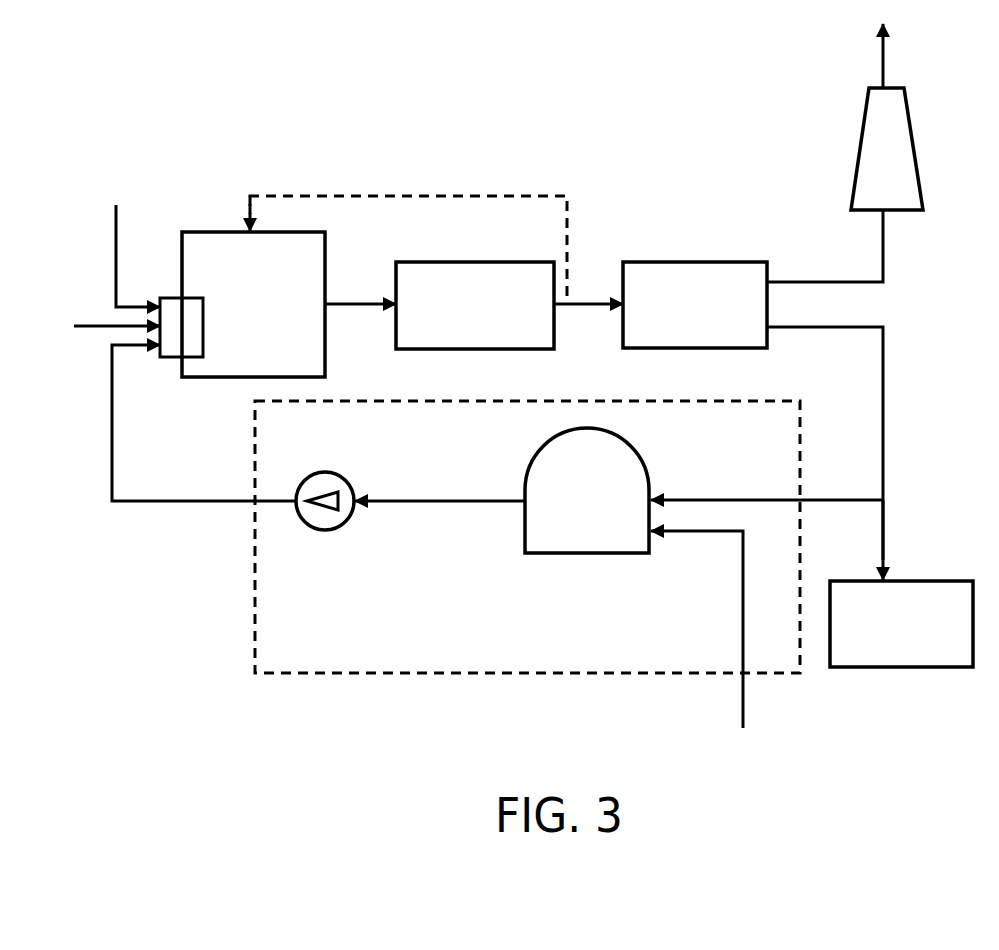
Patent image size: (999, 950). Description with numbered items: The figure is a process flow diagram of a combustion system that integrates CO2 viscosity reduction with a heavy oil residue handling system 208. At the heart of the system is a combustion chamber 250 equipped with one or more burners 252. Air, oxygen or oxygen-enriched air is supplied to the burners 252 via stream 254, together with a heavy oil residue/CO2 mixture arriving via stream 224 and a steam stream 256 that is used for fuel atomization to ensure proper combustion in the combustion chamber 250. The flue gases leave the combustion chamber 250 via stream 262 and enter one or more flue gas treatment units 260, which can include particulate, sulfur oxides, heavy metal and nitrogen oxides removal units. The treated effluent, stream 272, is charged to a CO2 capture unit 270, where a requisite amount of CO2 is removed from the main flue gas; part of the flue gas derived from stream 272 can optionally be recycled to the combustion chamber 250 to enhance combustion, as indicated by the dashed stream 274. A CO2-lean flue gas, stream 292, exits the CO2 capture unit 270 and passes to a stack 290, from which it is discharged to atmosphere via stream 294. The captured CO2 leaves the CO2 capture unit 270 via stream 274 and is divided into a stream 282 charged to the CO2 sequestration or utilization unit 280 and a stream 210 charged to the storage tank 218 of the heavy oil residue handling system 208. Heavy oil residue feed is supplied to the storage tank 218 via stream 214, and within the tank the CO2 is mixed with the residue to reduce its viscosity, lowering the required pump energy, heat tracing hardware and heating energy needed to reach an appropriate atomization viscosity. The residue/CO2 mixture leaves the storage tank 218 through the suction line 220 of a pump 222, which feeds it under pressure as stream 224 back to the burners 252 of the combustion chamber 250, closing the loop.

The heavy oil residue handling system 208 is at (253, 560).
The stream 210 is at (753, 499).
The stream 214 is at (742, 612).
The storage tank 218 is at (574, 508).
The pump suction line 220 is at (495, 500).
The pump 222 is at (337, 530).
The stream 224 is at (113, 412).
The combustion chamber 250 is at (239, 316).
The burners 252 is at (172, 298).
The stream 254 is at (115, 235).
The steam stream 256 is at (100, 325).
The flue gas treatment unit 260 is at (457, 316).
The stream 262 is at (375, 302).
The CO2 capture unit 270 is at (677, 316).
The stream 272 is at (605, 302).
The stream 274 is at (480, 195).
The CO2 sequestration or utilization unit 280 is at (884, 635).
The stream 282 is at (885, 525).
The stack 290 is at (858, 150).
The stream 292 is at (822, 282).
The stream 294 is at (880, 62).